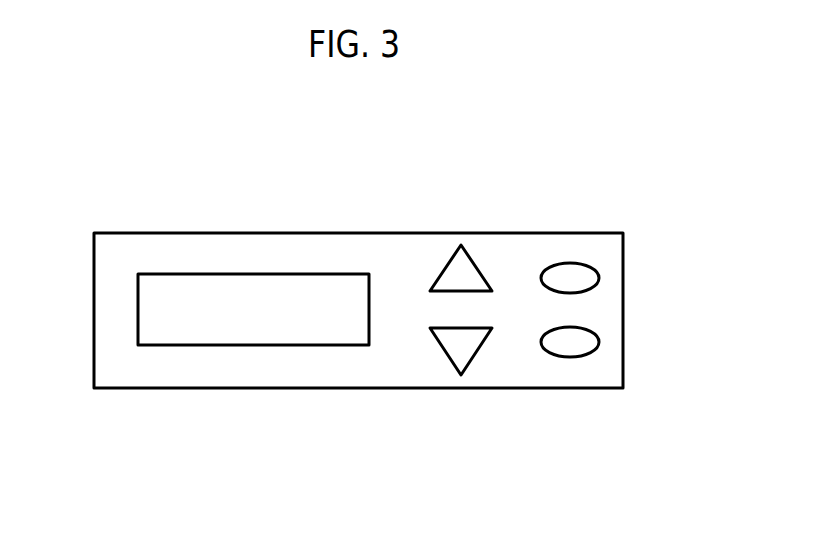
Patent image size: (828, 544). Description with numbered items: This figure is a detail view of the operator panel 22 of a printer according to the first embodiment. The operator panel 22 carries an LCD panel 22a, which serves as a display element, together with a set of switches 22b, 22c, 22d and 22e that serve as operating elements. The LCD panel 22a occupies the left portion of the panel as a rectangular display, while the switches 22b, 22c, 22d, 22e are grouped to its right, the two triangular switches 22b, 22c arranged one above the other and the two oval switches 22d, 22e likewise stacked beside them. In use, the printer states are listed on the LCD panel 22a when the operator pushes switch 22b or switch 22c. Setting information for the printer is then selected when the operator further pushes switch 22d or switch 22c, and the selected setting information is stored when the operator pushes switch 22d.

The operator panel 22 is at (356, 222).
The LCD panel 22a is at (239, 274).
The switch 22b is at (448, 263).
The switch 22c is at (448, 345).
The switch 22d is at (572, 263).
The switch 22e is at (572, 357).